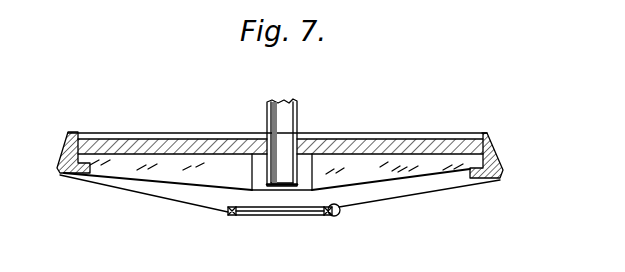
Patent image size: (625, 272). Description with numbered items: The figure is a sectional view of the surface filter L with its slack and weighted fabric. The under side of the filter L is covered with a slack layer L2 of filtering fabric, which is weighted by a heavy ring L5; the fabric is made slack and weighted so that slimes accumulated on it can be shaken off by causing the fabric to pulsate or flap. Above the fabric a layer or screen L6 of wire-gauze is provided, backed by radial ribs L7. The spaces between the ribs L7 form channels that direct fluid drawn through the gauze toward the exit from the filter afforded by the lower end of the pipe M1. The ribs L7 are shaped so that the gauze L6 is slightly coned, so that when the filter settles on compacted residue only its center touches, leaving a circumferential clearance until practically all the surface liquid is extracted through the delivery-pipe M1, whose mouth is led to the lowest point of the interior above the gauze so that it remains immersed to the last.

The surface filter L is at (280, 148).
The delivery-pipe M1 is at (283, 120).
The radial ribs L7 is at (280, 171).
The layer of wire-gauze L6 is at (160, 181).
The slack layer of filtering fabric L2 is at (204, 207).
The heavy ring L5 is at (337, 214).